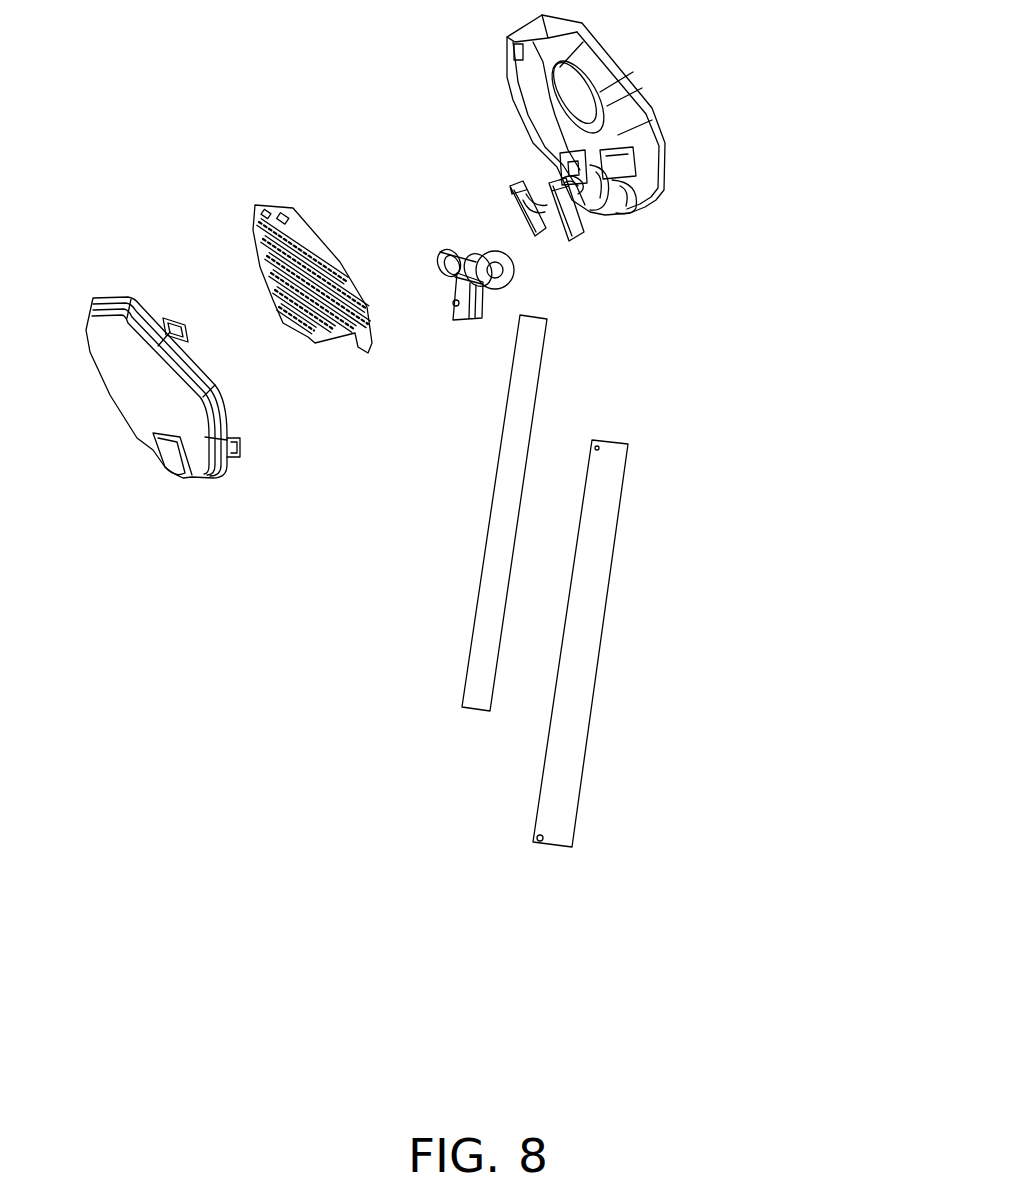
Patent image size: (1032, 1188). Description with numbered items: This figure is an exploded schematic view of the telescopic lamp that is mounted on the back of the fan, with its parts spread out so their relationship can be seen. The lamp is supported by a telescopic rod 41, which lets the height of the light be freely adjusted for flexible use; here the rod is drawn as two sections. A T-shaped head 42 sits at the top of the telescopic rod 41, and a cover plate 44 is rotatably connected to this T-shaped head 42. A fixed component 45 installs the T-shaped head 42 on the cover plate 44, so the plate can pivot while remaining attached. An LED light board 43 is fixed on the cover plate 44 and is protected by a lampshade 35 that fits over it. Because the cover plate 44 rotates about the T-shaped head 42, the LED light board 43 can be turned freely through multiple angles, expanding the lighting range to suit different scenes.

The lampshade 35 is at (152, 437).
The telescopic rod 41 is at (530, 438).
The T-shaped head 42 is at (463, 250).
The LED light board 43 is at (317, 310).
The cover plate 44 is at (655, 108).
The fixed component 45 is at (563, 218).